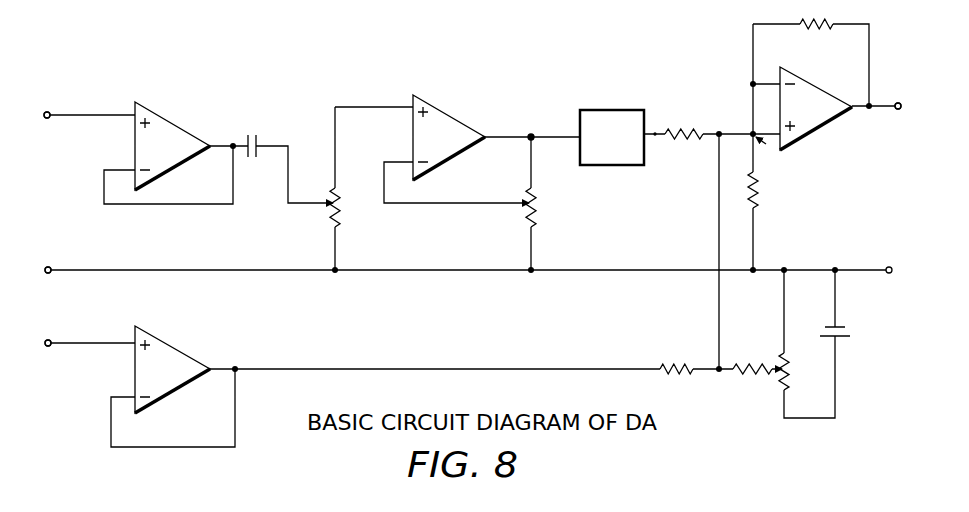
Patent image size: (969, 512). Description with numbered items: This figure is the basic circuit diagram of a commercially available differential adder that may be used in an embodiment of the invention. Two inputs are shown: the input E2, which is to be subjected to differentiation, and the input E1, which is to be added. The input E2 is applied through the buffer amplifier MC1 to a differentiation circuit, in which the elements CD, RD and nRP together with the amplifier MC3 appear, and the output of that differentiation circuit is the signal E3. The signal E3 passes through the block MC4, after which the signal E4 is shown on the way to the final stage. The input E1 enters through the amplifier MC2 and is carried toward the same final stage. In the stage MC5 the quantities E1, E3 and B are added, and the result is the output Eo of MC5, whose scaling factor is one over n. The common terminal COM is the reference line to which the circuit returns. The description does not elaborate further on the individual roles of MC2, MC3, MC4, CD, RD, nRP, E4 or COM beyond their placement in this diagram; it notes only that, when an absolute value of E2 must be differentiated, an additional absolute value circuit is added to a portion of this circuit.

The buffer amplifier MC1 is at (172, 146).
The operational amplifier MC2 (E1 buffer) MC2 is at (172, 369).
The operational amplifier MC3 is at (449, 137).
The circuit block MC4 is at (612, 137).
The adder MC5 is at (816, 108).
The capacitor CD is at (249, 130).
The potentiometer RD is at (320, 214).
The potentiometer nRP is at (505, 212).
The added quantity B is at (775, 382).
The input to be added E1 is at (40, 358).
The input to be differentiated E2 is at (37, 130).
The differentiation circuit output E3 is at (525, 122).
The node voltage E4 is at (661, 120).
The output Eo is at (889, 120).
The common terminal COM is at (44, 284).